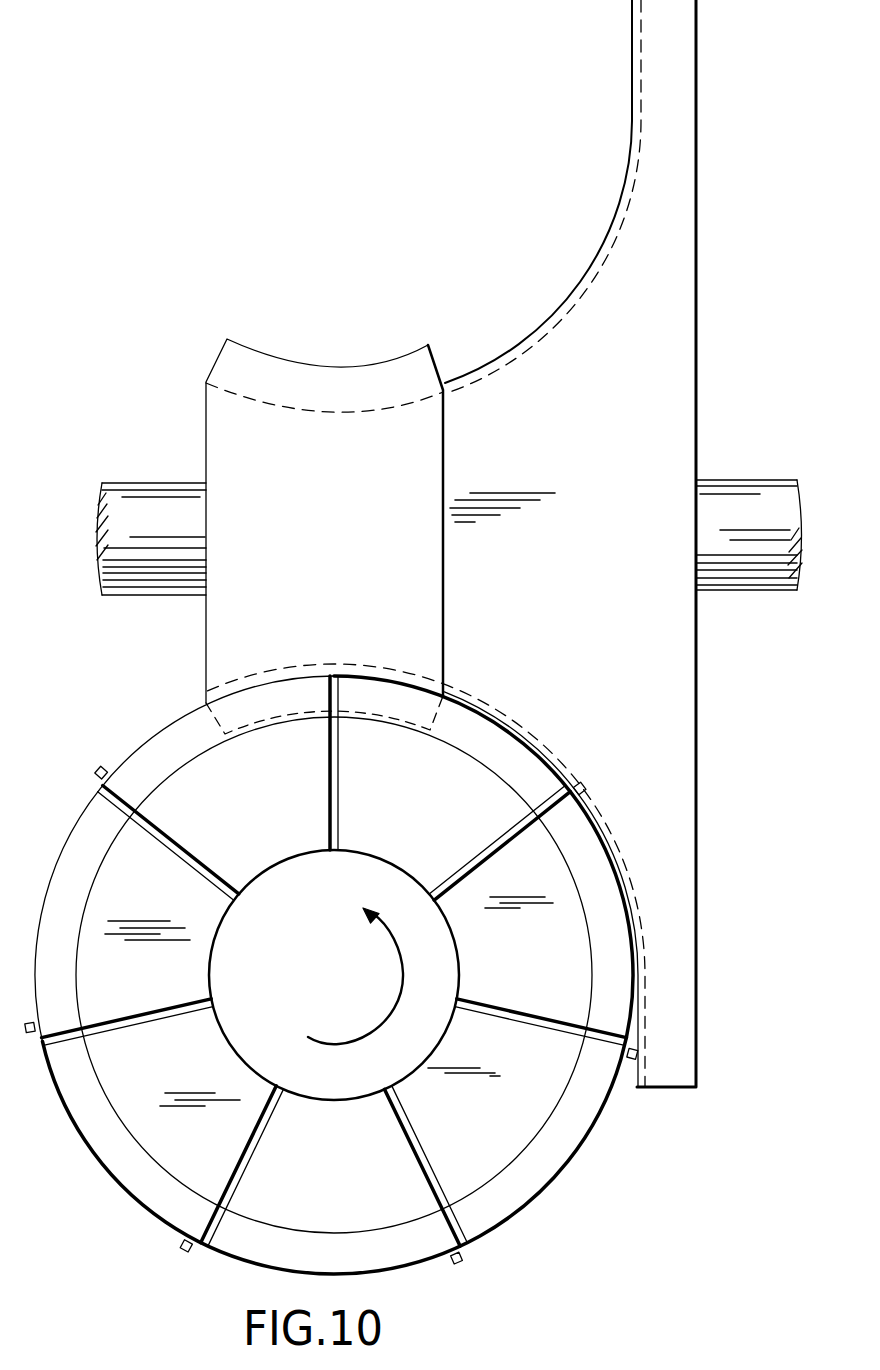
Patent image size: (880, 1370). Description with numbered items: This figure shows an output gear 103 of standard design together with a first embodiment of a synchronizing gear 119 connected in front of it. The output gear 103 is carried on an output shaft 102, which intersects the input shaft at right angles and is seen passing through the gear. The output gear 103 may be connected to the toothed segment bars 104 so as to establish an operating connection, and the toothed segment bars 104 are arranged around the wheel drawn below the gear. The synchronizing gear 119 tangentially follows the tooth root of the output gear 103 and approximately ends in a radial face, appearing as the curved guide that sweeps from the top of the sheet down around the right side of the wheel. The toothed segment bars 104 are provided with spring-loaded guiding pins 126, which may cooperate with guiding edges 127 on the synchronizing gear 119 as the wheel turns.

The output shaft 102 is at (153, 505).
The output gear 103 is at (277, 417).
The toothed segment bars 104 is at (185, 785).
The synchronizing gear 119 is at (545, 360).
The spring-loaded guiding pins 126 is at (98, 768).
The guiding edges 127 is at (641, 1089).